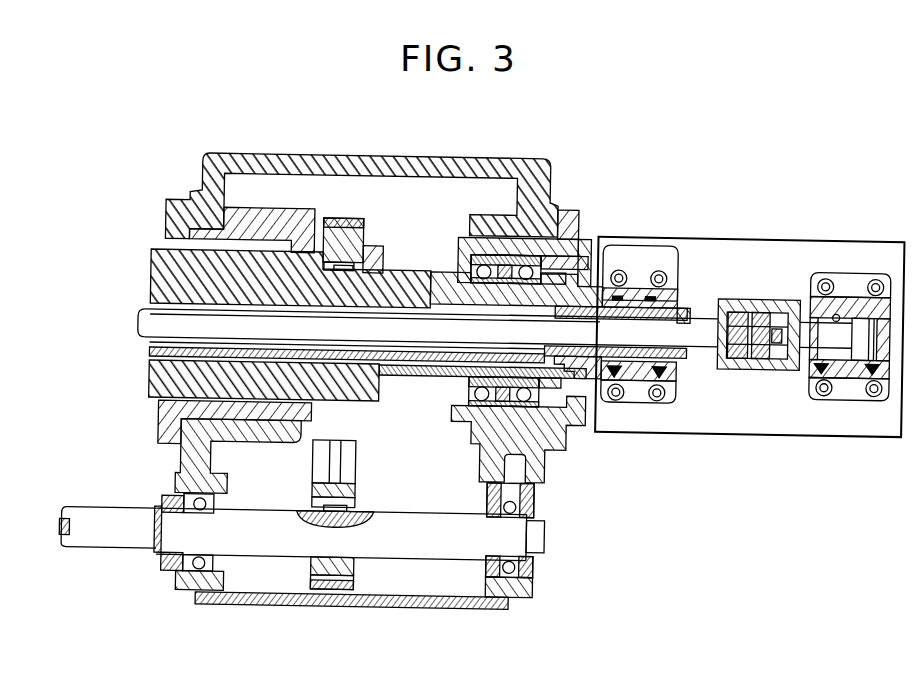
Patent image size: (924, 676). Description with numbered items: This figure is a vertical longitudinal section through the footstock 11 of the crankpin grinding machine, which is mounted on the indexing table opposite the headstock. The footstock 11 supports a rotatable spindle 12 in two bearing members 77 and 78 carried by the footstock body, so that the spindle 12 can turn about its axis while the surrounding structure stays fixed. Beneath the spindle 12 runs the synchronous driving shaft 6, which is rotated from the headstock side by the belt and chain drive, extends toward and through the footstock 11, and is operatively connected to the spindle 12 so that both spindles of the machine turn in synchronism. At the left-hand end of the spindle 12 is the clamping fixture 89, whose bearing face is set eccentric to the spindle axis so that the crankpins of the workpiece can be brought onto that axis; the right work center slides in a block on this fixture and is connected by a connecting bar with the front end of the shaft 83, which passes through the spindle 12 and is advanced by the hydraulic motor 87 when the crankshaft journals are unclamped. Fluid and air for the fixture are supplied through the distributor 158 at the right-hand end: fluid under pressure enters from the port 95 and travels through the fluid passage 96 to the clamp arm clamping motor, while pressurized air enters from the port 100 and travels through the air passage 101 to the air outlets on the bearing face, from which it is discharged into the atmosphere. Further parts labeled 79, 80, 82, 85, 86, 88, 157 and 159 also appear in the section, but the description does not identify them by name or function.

The footstock 11 is at (345, 159).
The spindle 12 is at (162, 275).
The shaft 82 is at (155, 340).
The shaft 83 is at (424, 327).
The key 79 is at (362, 237).
The fluid passage 96 is at (442, 342).
The air passage 101 is at (410, 368).
The bearing member 78 is at (485, 400).
The bearing member 77 is at (265, 409).
The clamping fixture 89 is at (352, 451).
The synchronous driving shaft 6 is at (425, 520).
The gear 80 is at (345, 566).
The bearing sleeve 85 is at (590, 285).
The frame 157 is at (727, 243).
The distributor 158 is at (660, 248).
The bolt 159 is at (641, 268).
The port 100 is at (615, 385).
The port 95 is at (647, 364).
The coupling 86 is at (757, 307).
The hydraulic motor 87 is at (836, 303).
The hub 88 is at (860, 333).